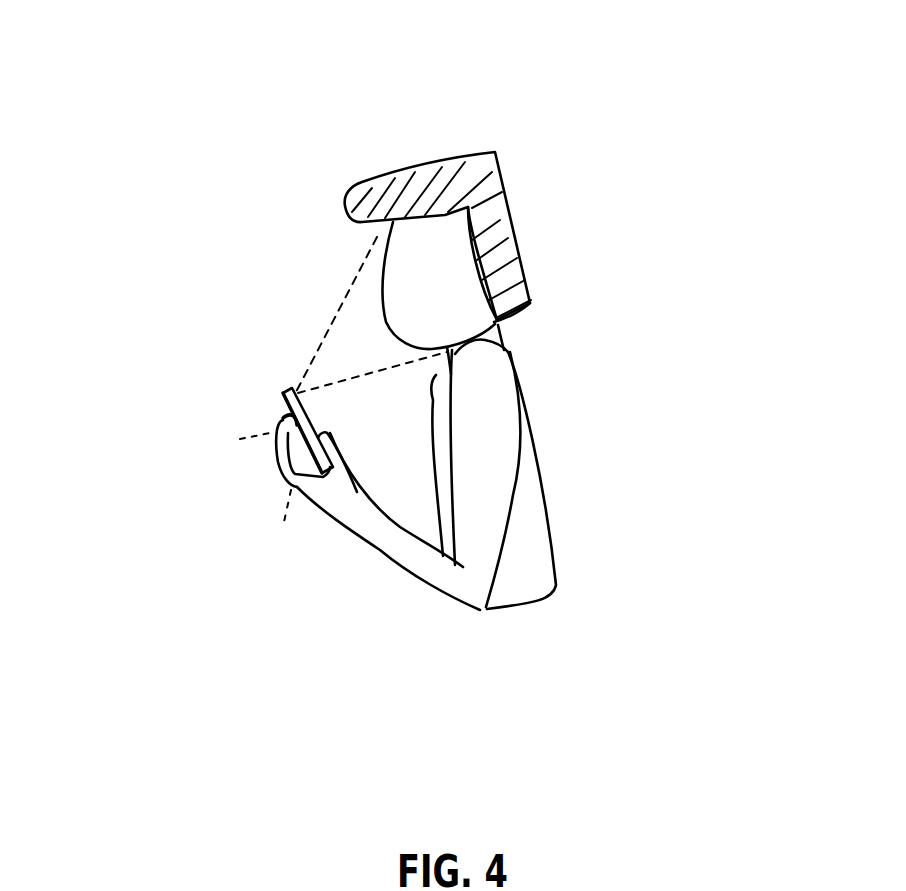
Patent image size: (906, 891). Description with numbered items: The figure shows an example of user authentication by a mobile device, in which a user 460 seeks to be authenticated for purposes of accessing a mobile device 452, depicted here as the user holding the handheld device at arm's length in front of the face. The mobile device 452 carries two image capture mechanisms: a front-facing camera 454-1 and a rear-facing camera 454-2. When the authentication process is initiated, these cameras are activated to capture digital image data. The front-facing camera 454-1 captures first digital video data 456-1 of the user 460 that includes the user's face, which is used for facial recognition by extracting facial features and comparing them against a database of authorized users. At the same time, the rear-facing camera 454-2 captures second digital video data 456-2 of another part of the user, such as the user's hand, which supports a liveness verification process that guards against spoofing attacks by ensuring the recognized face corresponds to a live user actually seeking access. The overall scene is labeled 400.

The usage environment 400 is at (182, 65).
The mobile device 452 is at (313, 421).
The front-facing camera 454-1 is at (293, 395).
The rear-facing camera 454-2 is at (277, 417).
The first digital video data 456-1 is at (350, 280).
The second digital video data 456-2 is at (287, 505).
The user 460 is at (530, 373).